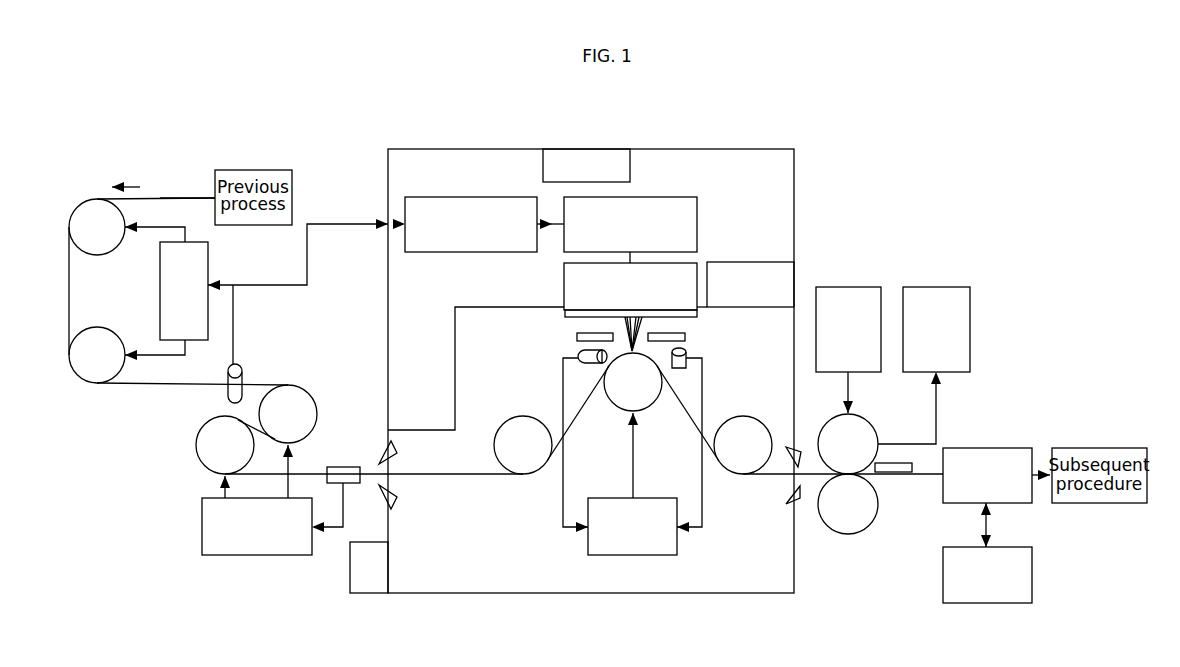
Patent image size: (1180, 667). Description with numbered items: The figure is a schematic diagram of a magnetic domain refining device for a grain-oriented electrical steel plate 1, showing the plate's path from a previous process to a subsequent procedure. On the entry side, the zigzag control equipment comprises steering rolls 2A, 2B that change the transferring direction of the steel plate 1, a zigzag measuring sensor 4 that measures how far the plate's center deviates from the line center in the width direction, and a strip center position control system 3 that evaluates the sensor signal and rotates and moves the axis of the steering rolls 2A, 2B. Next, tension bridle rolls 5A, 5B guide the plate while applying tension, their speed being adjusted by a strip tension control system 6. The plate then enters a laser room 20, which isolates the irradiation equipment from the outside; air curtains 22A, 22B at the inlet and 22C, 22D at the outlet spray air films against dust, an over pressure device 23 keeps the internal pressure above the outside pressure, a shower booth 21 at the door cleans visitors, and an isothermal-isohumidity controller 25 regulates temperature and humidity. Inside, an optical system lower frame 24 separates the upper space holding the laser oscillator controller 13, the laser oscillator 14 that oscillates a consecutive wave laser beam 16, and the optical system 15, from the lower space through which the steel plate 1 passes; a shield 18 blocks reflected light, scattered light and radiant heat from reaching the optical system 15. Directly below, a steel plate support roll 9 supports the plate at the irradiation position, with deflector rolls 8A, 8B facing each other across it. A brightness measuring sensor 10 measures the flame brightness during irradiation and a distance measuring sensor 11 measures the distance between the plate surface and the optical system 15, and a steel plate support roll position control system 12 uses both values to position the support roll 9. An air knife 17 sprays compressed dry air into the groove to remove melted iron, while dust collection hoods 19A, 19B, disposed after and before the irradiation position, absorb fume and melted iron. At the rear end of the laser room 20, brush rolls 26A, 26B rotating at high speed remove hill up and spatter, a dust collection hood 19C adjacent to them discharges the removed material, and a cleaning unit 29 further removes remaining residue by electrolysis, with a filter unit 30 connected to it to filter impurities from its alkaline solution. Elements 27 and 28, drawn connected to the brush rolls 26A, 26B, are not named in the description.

The steel plate 1 is at (175, 195).
The steering roll 2A is at (97, 213).
The steering roll 2B is at (96, 374).
The strip center position control system 3 is at (160, 285).
The zigzag measuring sensor 4 is at (244, 374).
The tension bridle roll 5A is at (300, 401).
The tension bridle roll 5B is at (204, 445).
The strip tension control system 6 is at (257, 556).
The deflector roll 8A is at (522, 420).
The deflector roll 8B is at (742, 421).
The steel plate support roll 9 is at (620, 407).
The brightness measuring sensor 10 is at (591, 364).
The distance measuring sensor 11 is at (683, 368).
The steel plate support roll position control system 12 is at (658, 497).
The laser oscillator controller 13 is at (472, 196).
The laser oscillator 14 is at (663, 196).
The optical system 15 is at (564, 287).
The laser beam 16 is at (625, 325).
The air knife 17 is at (645, 325).
The shield 18 is at (565, 314).
The dust collection hood 19A is at (575, 342).
The dust collection hood 19B is at (686, 342).
The dust collection hood 19C is at (895, 474).
The laser room 20 is at (563, 594).
The shower booth 21 is at (366, 594).
The air curtain 22A is at (398, 450).
The air curtain 22B is at (398, 500).
The air curtain 22C is at (800, 447).
The air curtain 22D is at (800, 508).
The over pressure device 23 is at (587, 148).
The optical system lower frame 24 is at (463, 306).
The isothermal-isohumidity controller 25 is at (752, 261).
The brush roll 26A is at (866, 426).
The brush roll 26B is at (866, 525).
The roller controller 27 is at (939, 286).
The roller drive unit 28 is at (850, 286).
The cleaning unit 29 is at (988, 447).
The filter unit 30 is at (988, 604).